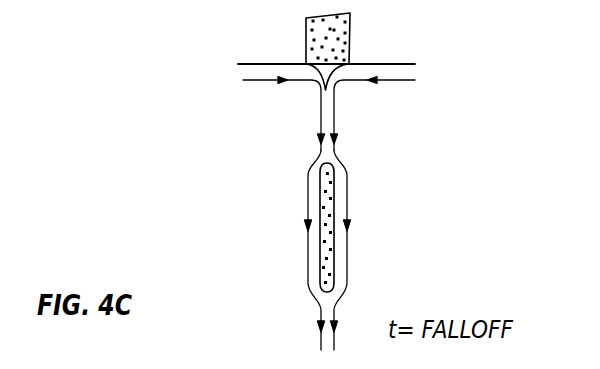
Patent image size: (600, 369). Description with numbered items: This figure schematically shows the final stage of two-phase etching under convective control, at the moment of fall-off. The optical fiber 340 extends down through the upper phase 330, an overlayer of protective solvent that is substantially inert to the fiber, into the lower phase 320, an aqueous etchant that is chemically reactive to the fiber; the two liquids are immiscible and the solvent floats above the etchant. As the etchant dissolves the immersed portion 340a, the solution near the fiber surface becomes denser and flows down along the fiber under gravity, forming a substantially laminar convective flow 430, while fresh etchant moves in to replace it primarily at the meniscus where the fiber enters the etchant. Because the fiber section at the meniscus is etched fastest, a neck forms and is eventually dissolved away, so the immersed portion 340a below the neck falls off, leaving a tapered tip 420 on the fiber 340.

The optical fiber 340 is at (306, 40).
The upper phase 330 is at (427, 55).
The lower phase 320 is at (427, 118).
The tapered tip 420 is at (318, 83).
The convective flow 430 is at (336, 154).
The immersed portion 340a is at (334, 268).